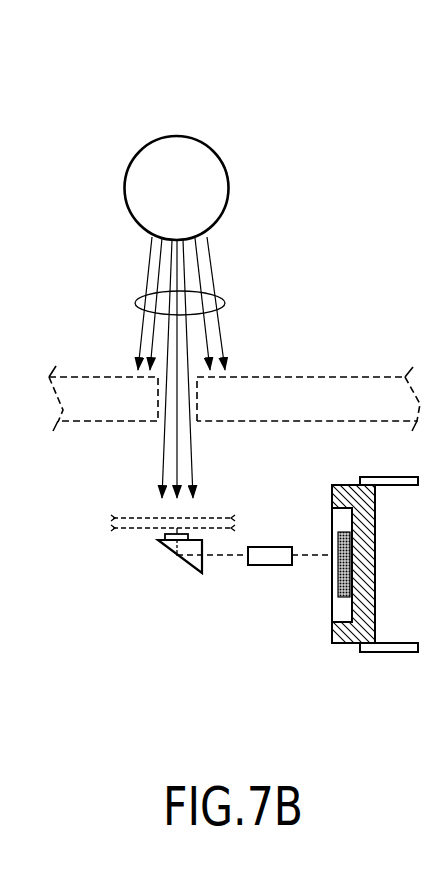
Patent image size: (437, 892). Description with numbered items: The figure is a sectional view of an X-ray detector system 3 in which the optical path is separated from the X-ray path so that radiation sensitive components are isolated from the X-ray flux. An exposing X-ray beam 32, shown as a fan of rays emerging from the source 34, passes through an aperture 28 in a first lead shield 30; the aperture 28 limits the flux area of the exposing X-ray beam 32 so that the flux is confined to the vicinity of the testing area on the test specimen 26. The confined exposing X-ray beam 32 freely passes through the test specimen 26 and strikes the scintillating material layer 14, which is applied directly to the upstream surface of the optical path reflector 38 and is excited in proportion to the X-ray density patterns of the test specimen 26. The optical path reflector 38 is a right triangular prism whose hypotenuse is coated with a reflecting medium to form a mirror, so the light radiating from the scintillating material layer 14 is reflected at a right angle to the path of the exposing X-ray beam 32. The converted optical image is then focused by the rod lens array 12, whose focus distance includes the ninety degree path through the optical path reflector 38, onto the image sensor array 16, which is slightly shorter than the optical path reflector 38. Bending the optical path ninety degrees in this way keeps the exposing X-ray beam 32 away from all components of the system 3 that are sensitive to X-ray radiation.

The X-ray detector system 3 is at (80, 124).
The rod lens array 12 is at (270, 567).
The scintillating material layer 14 is at (158, 537).
The image sensor array 16 is at (338, 545).
The test specimen 26 is at (130, 516).
The aperture 28 is at (192, 421).
The first lead shield 30 is at (330, 377).
The exposing X-ray beam 32 is at (225, 303).
The sphere / sample 34 is at (219, 159).
The optical path reflector 38 is at (194, 566).